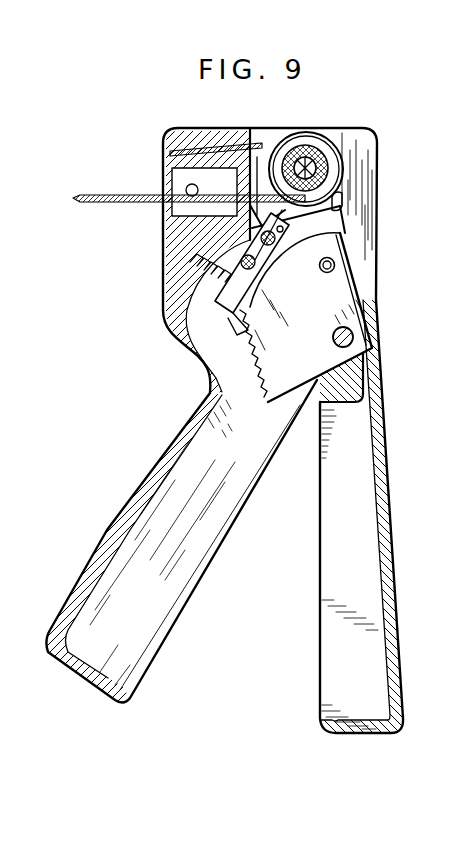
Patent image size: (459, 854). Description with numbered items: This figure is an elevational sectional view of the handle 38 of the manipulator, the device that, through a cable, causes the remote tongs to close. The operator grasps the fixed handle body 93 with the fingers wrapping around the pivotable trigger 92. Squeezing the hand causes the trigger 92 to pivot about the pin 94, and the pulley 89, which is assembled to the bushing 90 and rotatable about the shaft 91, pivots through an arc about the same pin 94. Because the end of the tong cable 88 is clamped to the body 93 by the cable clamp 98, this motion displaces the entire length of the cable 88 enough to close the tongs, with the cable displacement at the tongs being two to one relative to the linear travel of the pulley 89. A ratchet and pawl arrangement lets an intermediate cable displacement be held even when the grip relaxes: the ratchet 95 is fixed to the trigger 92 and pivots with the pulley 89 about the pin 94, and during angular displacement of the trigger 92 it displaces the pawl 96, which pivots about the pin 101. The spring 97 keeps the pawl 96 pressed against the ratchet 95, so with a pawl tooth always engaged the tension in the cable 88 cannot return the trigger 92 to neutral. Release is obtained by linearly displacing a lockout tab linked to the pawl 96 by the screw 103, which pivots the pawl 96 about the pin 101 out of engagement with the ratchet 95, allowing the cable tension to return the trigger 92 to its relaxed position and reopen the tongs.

The handle 38 is at (110, 290).
The tong cable 88 is at (123, 193).
The pulley 89 is at (293, 152).
The bushing 90 is at (305, 157).
The shaft 91 is at (312, 162).
The trigger 92 is at (383, 520).
The handle body 93 is at (140, 477).
The pin 94 is at (355, 337).
The ratchet 95 is at (345, 302).
The pawl 96 is at (253, 263).
The spring 97 is at (207, 283).
The cable clamp 98 is at (193, 153).
The pin 101 is at (263, 258).
The screw 103 is at (280, 228).